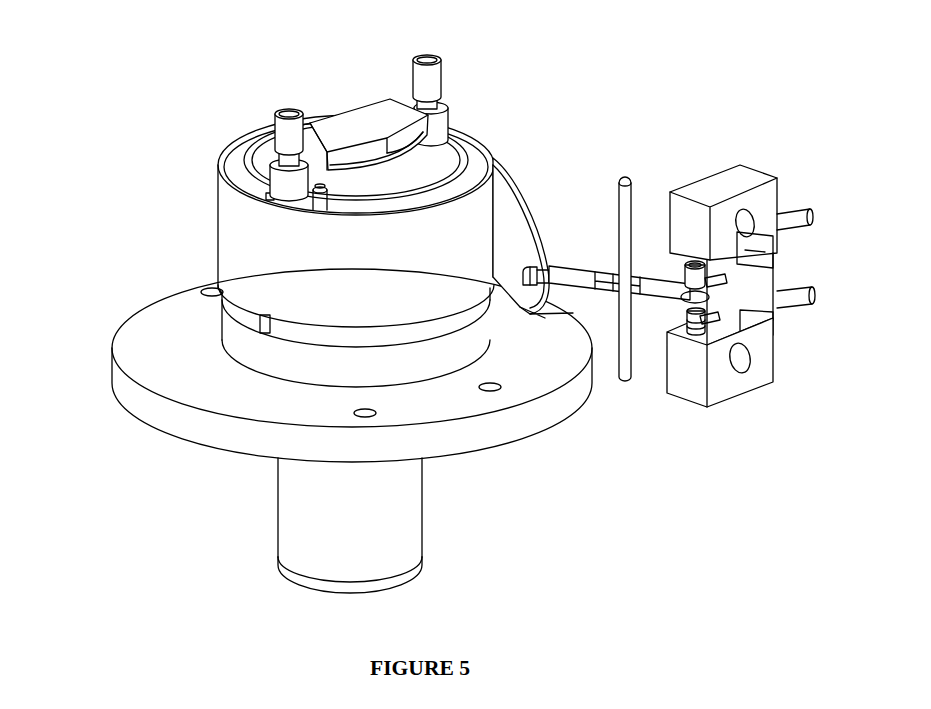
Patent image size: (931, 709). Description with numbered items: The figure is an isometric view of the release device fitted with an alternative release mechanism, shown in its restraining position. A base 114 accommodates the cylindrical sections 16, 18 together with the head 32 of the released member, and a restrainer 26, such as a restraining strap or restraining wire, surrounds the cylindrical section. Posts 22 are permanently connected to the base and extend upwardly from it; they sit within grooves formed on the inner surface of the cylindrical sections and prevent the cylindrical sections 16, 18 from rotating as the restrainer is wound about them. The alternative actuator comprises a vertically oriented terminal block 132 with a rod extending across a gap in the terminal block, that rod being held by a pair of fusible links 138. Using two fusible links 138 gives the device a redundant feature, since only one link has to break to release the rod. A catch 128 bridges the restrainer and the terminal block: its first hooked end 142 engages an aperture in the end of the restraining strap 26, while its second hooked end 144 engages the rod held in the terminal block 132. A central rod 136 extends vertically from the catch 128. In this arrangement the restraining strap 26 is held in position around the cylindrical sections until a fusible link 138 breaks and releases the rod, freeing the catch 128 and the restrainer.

The cylindrical section 16 is at (228, 158).
The cylindrical section 18 is at (482, 145).
The posts 22 is at (452, 76).
The restrainer 26 is at (528, 208).
The head 32 is at (337, 109).
The base 114 is at (159, 336).
The catch 128 is at (575, 248).
The terminal block 132 is at (778, 375).
The central rod 136 is at (644, 186).
The fusible links 138 is at (721, 295).
The first hooked end 142 is at (533, 298).
The second hooked end 144 is at (690, 305).